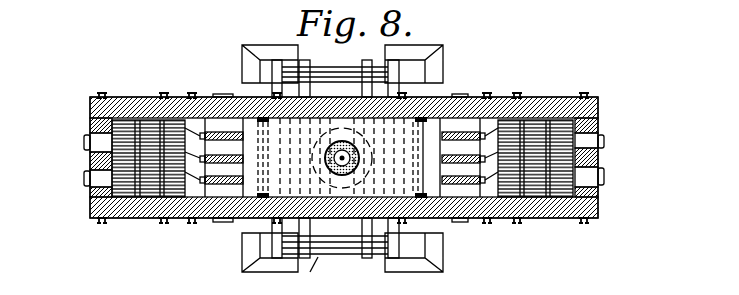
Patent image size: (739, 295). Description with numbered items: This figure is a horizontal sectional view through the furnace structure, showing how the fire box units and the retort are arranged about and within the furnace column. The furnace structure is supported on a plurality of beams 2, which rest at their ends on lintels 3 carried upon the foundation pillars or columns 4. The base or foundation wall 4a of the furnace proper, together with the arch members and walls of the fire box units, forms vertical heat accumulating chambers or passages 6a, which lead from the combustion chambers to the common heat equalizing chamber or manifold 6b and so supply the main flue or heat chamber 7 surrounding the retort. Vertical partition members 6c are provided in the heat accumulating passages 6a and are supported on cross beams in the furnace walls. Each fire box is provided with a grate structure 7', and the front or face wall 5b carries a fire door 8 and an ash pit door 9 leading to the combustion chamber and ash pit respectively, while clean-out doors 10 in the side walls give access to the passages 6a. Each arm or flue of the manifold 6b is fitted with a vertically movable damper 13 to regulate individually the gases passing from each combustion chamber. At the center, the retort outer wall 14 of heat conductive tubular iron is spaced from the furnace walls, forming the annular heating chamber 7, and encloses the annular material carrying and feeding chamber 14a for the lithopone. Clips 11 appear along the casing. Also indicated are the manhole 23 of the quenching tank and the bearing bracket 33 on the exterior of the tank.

The beam 2 is at (294, 64).
The lintel 3 is at (334, 80).
The foundation pillar 4 is at (258, 47).
The base or foundation wall 4a is at (350, 116).
The front or face wall 5b is at (90, 166).
The heat accumulating chamber 6a is at (341, 156).
The heat equalizing chamber or manifold 6b is at (342, 157).
The vertical partition member 6c is at (90, 104).
The main flue or heat chamber 7 is at (310, 272).
The grate structure 7' is at (341, 168).
The fire door 8 is at (86, 140).
The ash pit door 9 is at (345, 240).
The clean-out door 10 is at (303, 208).
The clip 11 is at (98, 96).
The damper 13 is at (257, 112).
The outer wall of retort 14 is at (338, 174).
The annular material carrying and feeding chamber 14a is at (347, 174).
The manhole 23 is at (213, 96).
The bearing bracket 33 is at (372, 152).